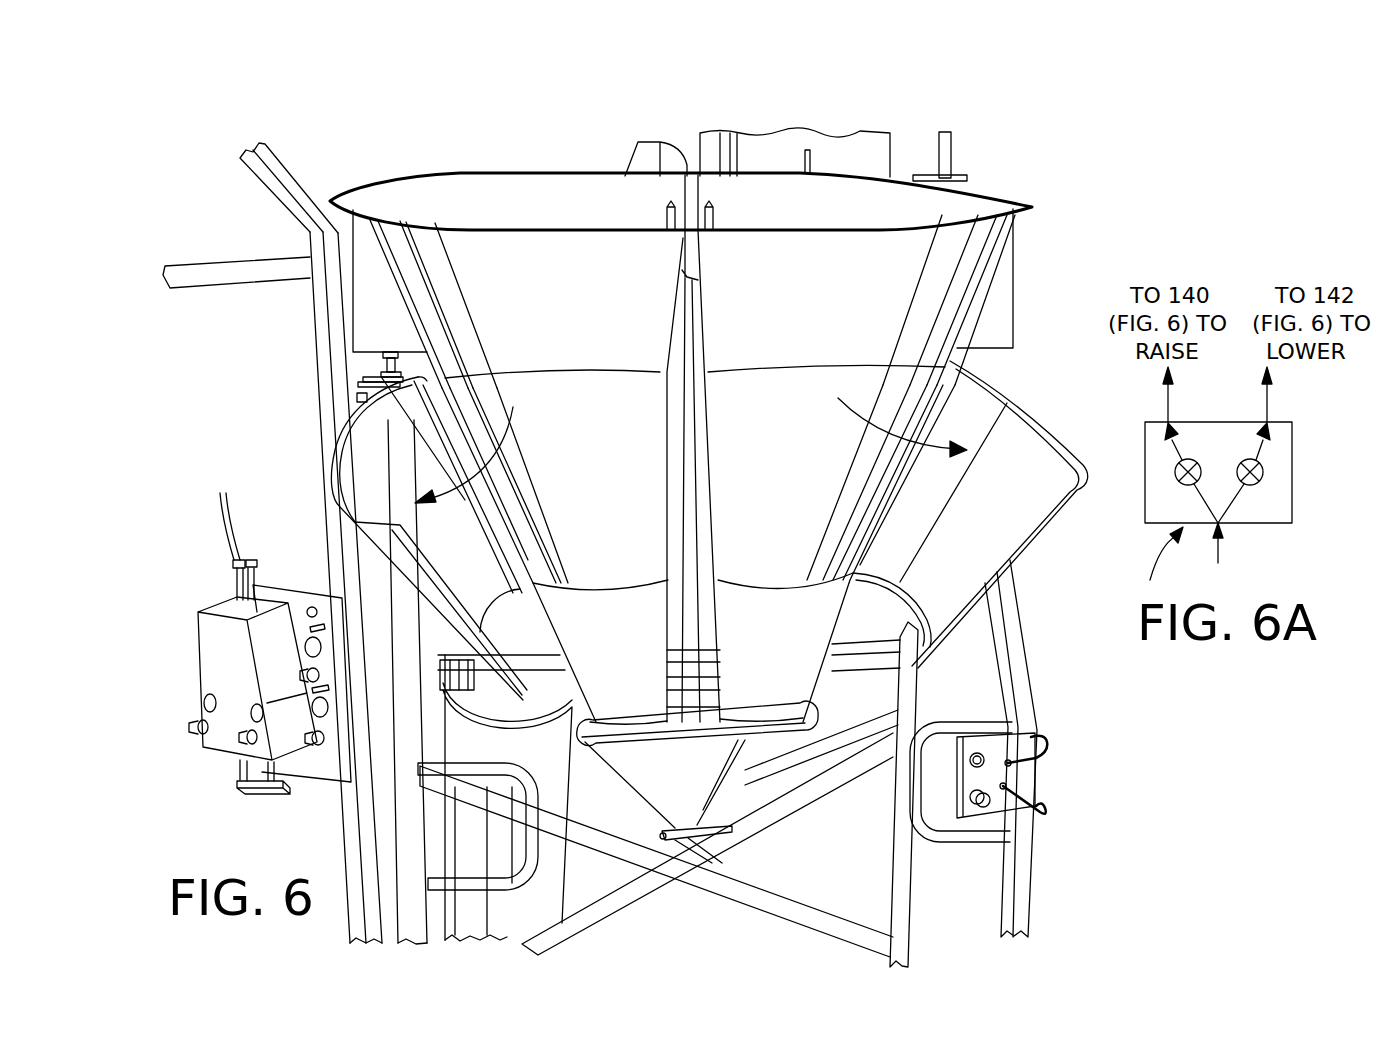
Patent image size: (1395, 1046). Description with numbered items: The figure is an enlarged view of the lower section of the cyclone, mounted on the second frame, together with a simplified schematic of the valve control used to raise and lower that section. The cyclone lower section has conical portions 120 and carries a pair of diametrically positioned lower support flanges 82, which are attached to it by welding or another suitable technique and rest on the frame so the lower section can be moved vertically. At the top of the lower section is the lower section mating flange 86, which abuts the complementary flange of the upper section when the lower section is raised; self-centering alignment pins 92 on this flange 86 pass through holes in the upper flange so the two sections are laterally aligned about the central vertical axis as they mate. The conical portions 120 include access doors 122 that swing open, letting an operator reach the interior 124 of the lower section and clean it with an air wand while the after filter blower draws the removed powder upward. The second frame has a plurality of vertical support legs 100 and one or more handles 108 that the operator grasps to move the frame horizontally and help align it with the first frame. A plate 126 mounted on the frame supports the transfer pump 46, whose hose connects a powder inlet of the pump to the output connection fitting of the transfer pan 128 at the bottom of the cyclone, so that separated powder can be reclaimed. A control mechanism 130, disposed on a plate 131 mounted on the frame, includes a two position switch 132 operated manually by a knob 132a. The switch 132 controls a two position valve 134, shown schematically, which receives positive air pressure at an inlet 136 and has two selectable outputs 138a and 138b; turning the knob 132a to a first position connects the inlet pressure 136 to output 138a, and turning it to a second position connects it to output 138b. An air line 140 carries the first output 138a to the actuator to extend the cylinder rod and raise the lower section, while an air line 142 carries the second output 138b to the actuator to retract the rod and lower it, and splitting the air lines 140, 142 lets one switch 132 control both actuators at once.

In FIG. 6, the transfer pump 46 is at (193, 678).
In FIG. 6, the lower support flange 82 is at (363, 299).
In FIG. 6, the lower section mating flange 86 is at (540, 175).
In FIG. 6, the self-centering alignment pin 92 is at (663, 215).
In FIG. 6, the vertical support leg 100 is at (320, 348).
In FIG. 6, the handle 108 is at (910, 779).
In FIG. 6, the conical portion 120 is at (586, 314).
In FIG. 6, the access door 122 is at (335, 447).
In FIG. 6, the interior 124 is at (586, 450).
In FIG. 6, the plate 126 is at (328, 760).
In FIG. 6, the transfer pan 128 is at (718, 845).
In FIG. 6, the control mechanism 130 is at (1028, 833).
In FIG. 6, the plate 131 is at (1027, 750).
In FIG. 6A, the two position switch 132 is at (1153, 493).
In FIG. 6, the knob 132a is at (975, 807).
In FIG. 6A, the two position valve 134 is at (1146, 562).
In FIG. 6A, the inlet 136 is at (1223, 563).
In FIG. 6A, the first output 138a is at (1165, 398).
In FIG. 6A, the second output 138b is at (1272, 407).
In FIG. 6, the air line 140 is at (1050, 750).
In FIG. 6, the air line 142 is at (1042, 814).